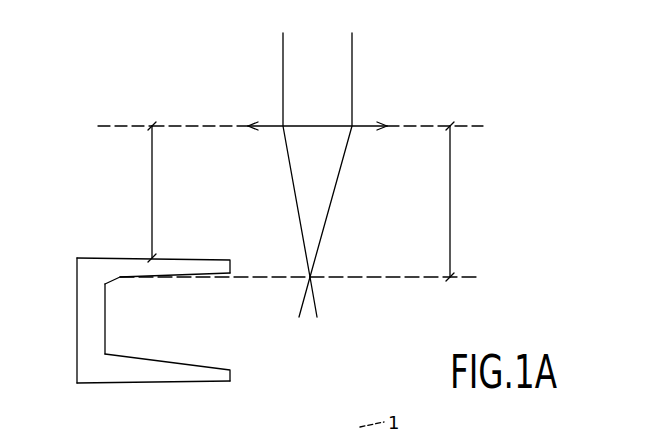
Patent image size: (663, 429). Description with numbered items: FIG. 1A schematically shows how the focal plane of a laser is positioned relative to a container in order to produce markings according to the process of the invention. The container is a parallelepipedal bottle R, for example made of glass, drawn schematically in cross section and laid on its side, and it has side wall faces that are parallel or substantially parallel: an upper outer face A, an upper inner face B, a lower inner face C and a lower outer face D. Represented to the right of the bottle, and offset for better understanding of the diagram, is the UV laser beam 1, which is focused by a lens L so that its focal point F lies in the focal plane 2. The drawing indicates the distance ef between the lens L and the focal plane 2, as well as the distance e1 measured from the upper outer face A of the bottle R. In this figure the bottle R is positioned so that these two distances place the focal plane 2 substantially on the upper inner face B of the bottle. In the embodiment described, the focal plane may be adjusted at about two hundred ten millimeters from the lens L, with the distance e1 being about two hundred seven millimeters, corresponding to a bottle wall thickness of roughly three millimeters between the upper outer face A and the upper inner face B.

The UV laser beam 1 is at (330, 72).
The lens L is at (272, 122).
The focal point F is at (313, 274).
The focal plane 2 is at (458, 277).
The distance e1 is at (130, 197).
The focal distance ef is at (481, 196).
The bottle R is at (132, 323).
The upper outer face A is at (185, 258).
The upper inner face B is at (168, 278).
The lower inner face C is at (163, 357).
The lower outer face D is at (153, 384).